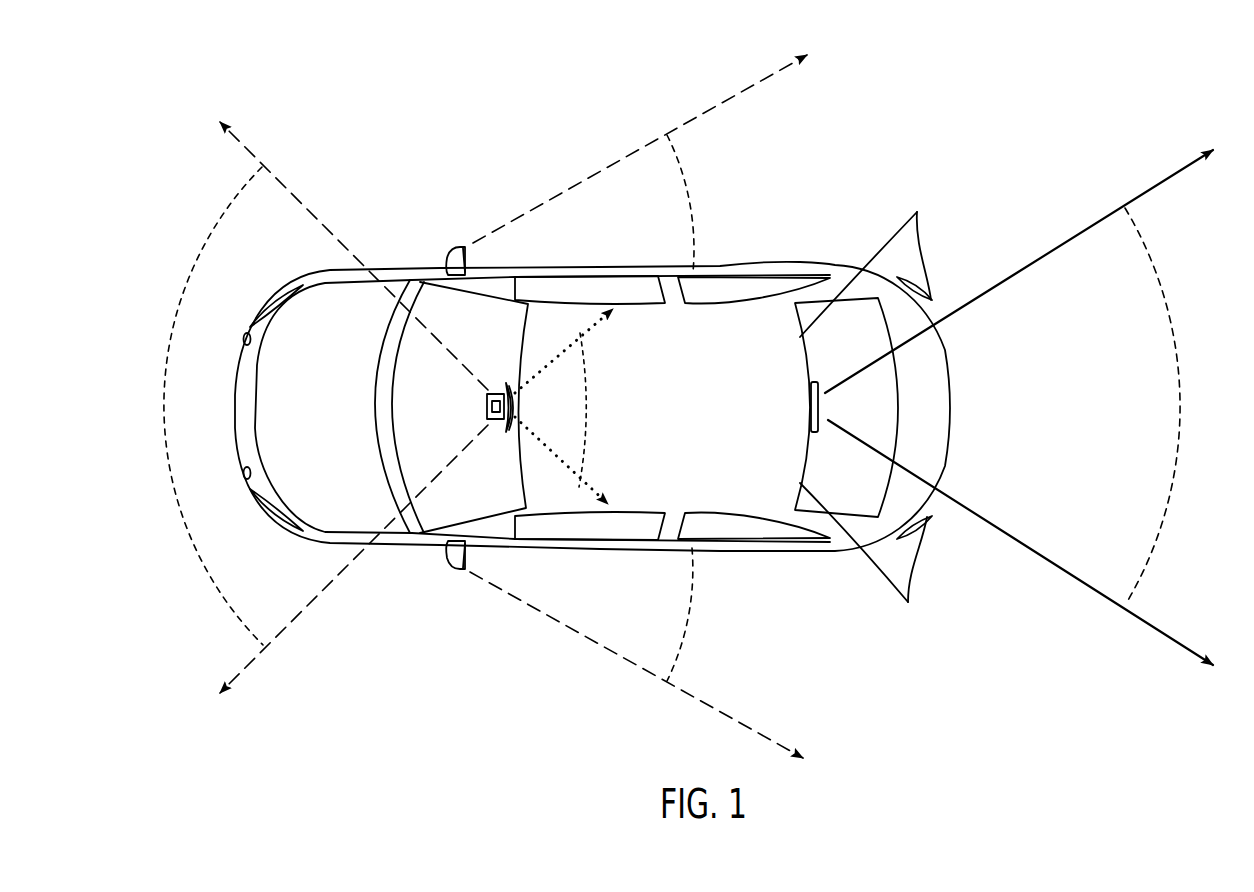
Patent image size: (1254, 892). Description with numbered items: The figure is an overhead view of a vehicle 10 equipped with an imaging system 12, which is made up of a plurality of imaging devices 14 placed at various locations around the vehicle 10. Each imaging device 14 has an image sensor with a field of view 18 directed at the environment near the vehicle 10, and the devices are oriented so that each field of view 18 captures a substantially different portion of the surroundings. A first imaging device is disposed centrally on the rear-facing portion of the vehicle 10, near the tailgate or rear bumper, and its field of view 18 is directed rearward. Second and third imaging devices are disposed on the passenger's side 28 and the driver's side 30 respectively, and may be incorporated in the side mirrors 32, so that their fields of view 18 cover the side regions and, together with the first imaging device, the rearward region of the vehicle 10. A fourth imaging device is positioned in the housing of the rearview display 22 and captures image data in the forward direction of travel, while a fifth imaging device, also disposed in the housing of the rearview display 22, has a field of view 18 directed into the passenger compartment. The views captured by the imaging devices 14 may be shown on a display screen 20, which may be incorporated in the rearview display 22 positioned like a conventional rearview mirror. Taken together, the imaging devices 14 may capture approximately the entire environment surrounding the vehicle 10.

The vehicle 10 is at (276, 424).
The imaging system 12 is at (313, 123).
The imaging device 14 is at (717, 399).
The field of view 18 is at (690, 192).
The display screen 20 is at (485, 379).
The rearview display 22 is at (508, 384).
The passenger's side 28 is at (430, 244).
The driver's side 30 is at (418, 576).
The side mirror 32 is at (466, 246).